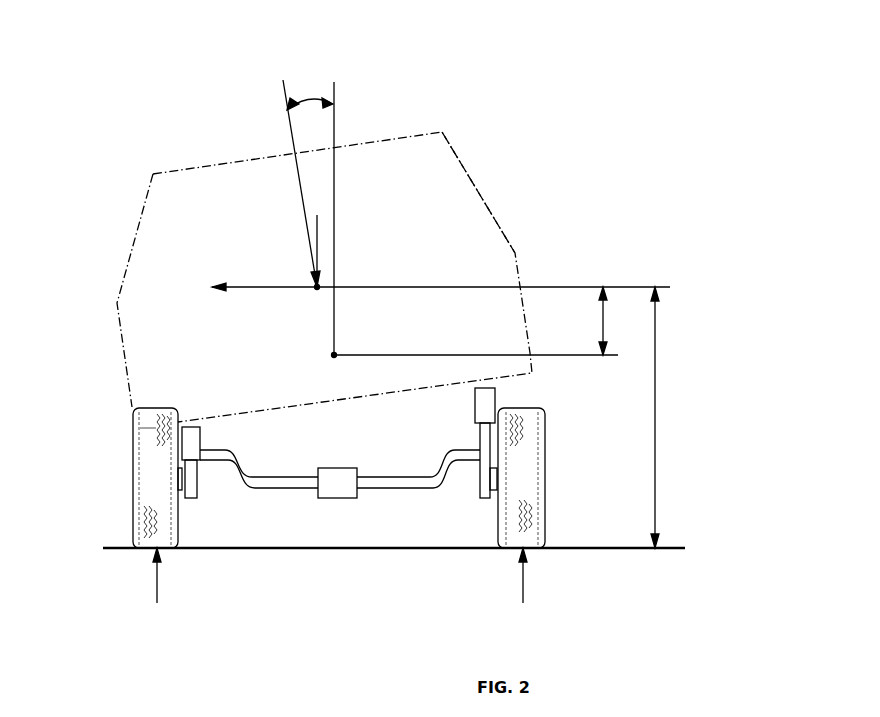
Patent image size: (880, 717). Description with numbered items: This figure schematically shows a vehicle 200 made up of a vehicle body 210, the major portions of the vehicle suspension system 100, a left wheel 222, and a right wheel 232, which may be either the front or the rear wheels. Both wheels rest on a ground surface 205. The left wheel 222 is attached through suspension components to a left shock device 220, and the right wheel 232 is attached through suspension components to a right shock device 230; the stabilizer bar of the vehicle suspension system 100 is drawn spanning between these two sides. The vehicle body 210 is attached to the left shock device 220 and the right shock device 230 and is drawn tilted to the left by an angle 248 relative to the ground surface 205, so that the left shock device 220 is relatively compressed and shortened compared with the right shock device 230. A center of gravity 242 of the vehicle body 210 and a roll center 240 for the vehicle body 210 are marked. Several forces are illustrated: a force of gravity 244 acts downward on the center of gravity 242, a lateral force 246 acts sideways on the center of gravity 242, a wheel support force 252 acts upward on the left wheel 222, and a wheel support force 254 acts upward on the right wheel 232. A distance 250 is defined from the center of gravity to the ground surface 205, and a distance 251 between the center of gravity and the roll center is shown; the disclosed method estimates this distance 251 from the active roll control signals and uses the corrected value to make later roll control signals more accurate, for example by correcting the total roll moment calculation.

The vehicle suspension system 100 is at (303, 488).
The vehicle 200 is at (460, 155).
The ground surface 205 is at (350, 549).
The vehicle body 210 is at (482, 227).
The left shock device 220 is at (190, 498).
The left wheel 222 is at (140, 470).
The right shock device 230 is at (482, 498).
The right wheel 232 is at (527, 475).
The roll center 240 is at (347, 355).
The center of gravity 242 is at (316, 286).
The force of gravity 244 is at (322, 244).
The lateral force 246 is at (270, 288).
The angle 248 is at (310, 100).
The distance 250 is at (657, 414).
The distance between center of gravity and roll center 251 is at (604, 318).
The wheel support force 252 is at (153, 578).
The wheel support force 254 is at (524, 580).